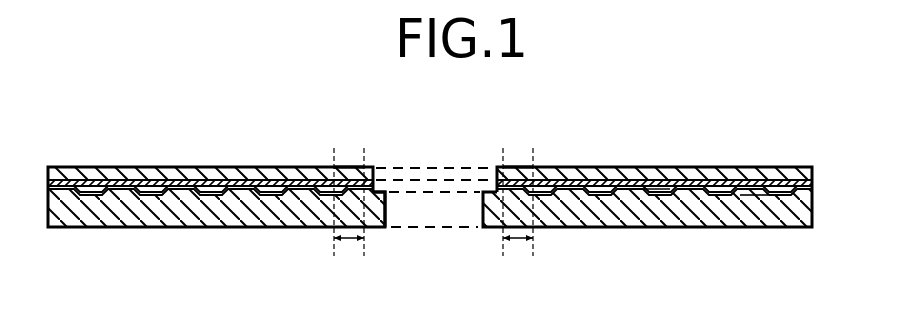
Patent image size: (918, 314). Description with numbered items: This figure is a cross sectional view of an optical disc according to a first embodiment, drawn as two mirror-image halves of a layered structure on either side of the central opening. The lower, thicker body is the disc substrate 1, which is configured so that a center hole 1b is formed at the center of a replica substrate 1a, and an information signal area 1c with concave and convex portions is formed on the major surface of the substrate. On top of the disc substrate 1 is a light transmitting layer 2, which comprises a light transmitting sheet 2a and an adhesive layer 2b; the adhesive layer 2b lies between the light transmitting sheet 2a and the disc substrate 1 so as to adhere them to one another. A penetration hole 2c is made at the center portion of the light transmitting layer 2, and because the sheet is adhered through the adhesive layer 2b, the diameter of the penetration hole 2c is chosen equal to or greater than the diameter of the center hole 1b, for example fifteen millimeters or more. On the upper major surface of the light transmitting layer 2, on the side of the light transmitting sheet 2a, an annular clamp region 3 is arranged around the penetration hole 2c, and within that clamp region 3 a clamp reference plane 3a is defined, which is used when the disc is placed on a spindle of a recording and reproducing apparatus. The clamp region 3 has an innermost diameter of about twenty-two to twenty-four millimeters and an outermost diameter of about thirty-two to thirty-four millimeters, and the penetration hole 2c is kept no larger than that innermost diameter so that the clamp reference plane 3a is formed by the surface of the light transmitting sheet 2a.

The disc substrate 1 is at (465, 233).
The replica substrate 1a is at (654, 196).
The center hole 1b is at (388, 208).
The information signal area 1c is at (756, 196).
The light transmitting layer 2 is at (464, 196).
The light transmitting sheet 2a is at (178, 173).
The adhesive layer 2b is at (105, 190).
The penetration hole 2c is at (497, 171).
The clamp region 3 is at (350, 241).
The clamp reference plane 3a is at (350, 168).